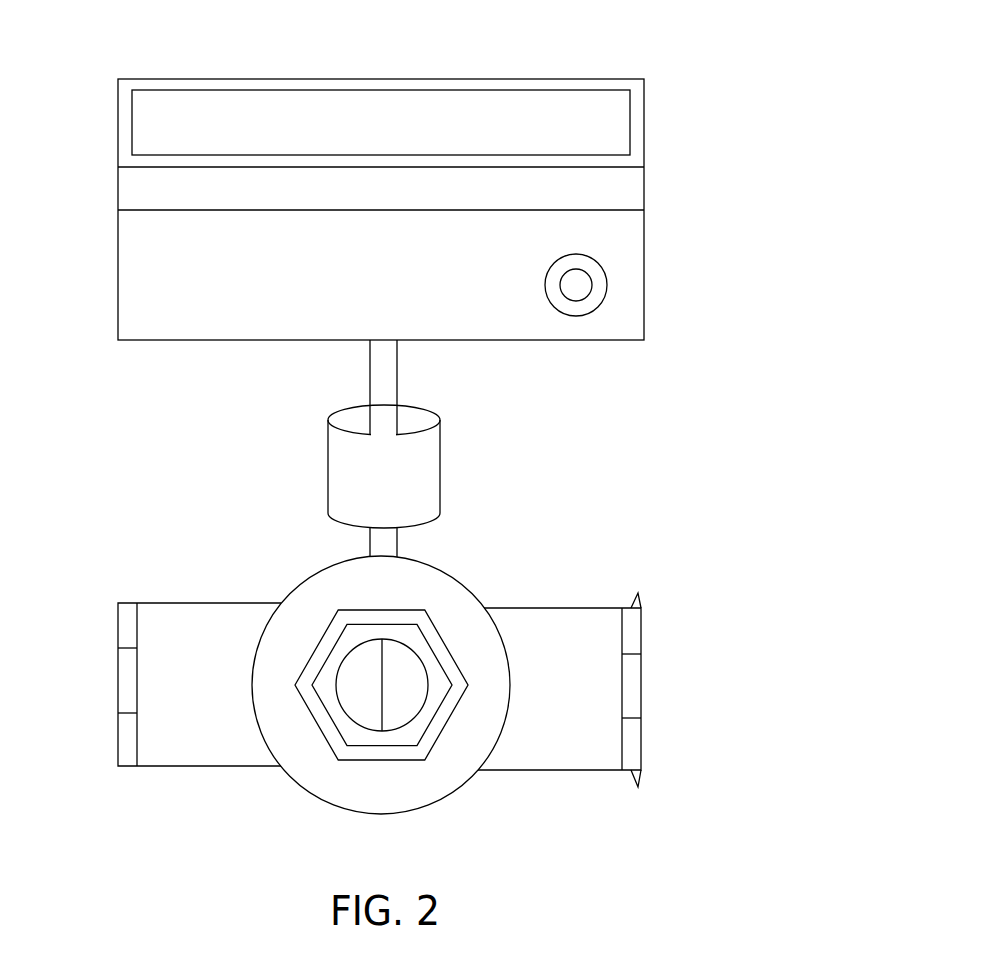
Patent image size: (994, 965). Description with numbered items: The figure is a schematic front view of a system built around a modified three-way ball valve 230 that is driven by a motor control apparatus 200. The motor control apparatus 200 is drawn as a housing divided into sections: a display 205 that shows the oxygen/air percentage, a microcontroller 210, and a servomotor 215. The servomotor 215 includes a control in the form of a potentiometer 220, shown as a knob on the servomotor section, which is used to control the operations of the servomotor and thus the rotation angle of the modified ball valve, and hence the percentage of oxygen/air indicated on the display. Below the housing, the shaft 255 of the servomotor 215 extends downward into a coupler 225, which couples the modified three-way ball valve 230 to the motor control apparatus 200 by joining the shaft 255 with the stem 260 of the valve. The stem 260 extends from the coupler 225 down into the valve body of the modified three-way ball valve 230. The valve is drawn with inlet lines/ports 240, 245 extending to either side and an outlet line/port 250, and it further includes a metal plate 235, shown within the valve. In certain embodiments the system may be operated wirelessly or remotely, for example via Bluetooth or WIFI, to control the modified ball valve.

The motor control apparatus 200 is at (463, 75).
The display 205 is at (630, 122).
The microcontroller 210 is at (644, 190).
The servomotor 215 is at (644, 262).
The potentiometer 220 is at (591, 312).
The coupler 225 is at (440, 455).
The modified three-way ball valve 230 is at (437, 568).
The metal plate 235 is at (383, 700).
The inlet line/port 240 is at (236, 603).
The inlet line/port 245 is at (523, 607).
The outlet line/port 250 is at (322, 802).
The shaft 255 is at (370, 365).
The stem 260 is at (370, 541).